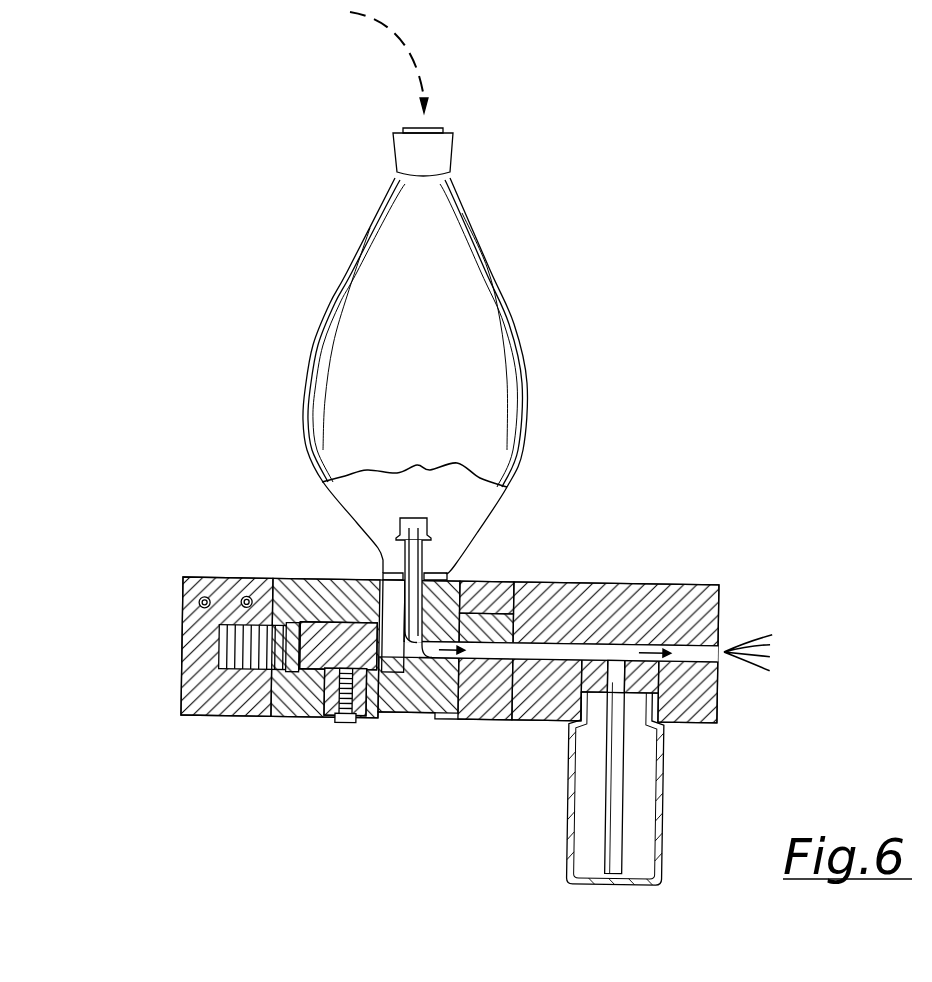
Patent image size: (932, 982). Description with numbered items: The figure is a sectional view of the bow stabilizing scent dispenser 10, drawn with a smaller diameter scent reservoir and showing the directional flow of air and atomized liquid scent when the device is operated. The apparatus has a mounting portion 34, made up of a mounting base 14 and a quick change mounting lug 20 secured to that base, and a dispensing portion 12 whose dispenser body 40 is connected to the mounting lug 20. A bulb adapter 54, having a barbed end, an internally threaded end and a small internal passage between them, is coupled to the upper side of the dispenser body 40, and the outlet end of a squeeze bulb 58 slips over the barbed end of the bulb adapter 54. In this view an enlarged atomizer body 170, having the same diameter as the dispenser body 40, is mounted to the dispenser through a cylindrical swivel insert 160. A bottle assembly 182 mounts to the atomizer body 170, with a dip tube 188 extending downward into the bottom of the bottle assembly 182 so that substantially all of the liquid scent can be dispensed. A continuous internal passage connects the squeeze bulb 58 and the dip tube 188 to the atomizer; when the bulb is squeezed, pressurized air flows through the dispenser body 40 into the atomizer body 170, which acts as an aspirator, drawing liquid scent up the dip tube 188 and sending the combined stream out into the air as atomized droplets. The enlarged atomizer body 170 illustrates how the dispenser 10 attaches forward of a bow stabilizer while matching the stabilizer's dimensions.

The bow stabilizing scent dispenser 10 is at (246, 266).
The dispensing portion 12 is at (614, 459).
The mounting base 14 is at (210, 585).
The quick change mounting lug 20 is at (300, 714).
The mounting portion 34 is at (245, 772).
The dispenser body 40 is at (460, 583).
The bulb adapter 54 is at (397, 533).
The squeeze bulb 58 is at (515, 360).
The cylindrical swivel insert 160 is at (510, 624).
The enlarged atomizer body 170 is at (668, 590).
The bottle assembly 182 is at (552, 812).
The dip tube 188 is at (620, 770).